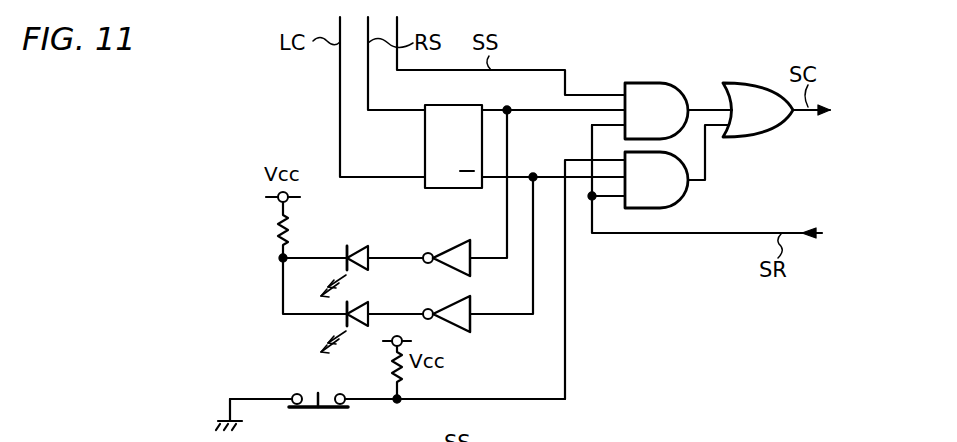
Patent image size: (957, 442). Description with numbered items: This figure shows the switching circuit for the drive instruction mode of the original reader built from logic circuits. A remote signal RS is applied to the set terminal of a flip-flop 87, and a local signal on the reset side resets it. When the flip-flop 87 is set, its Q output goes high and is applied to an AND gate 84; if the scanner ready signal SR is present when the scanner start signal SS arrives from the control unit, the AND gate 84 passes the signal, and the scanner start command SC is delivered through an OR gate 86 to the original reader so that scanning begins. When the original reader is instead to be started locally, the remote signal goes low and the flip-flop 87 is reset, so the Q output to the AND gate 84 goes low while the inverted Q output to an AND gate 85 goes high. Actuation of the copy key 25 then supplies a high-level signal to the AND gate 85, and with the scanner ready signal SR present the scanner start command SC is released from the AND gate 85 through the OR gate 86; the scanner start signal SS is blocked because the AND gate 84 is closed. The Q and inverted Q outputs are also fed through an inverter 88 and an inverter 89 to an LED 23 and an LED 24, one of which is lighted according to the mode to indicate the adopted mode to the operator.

The LED 23 is at (361, 247).
The LED 24 is at (370, 308).
The copy key 25 is at (330, 410).
The AND gate 84 is at (662, 83).
The AND gate 85 is at (690, 196).
The OR gate 86 is at (758, 83).
The flip-flop 87 is at (437, 190).
The inverter 88 is at (456, 246).
The inverter 89 is at (470, 330).